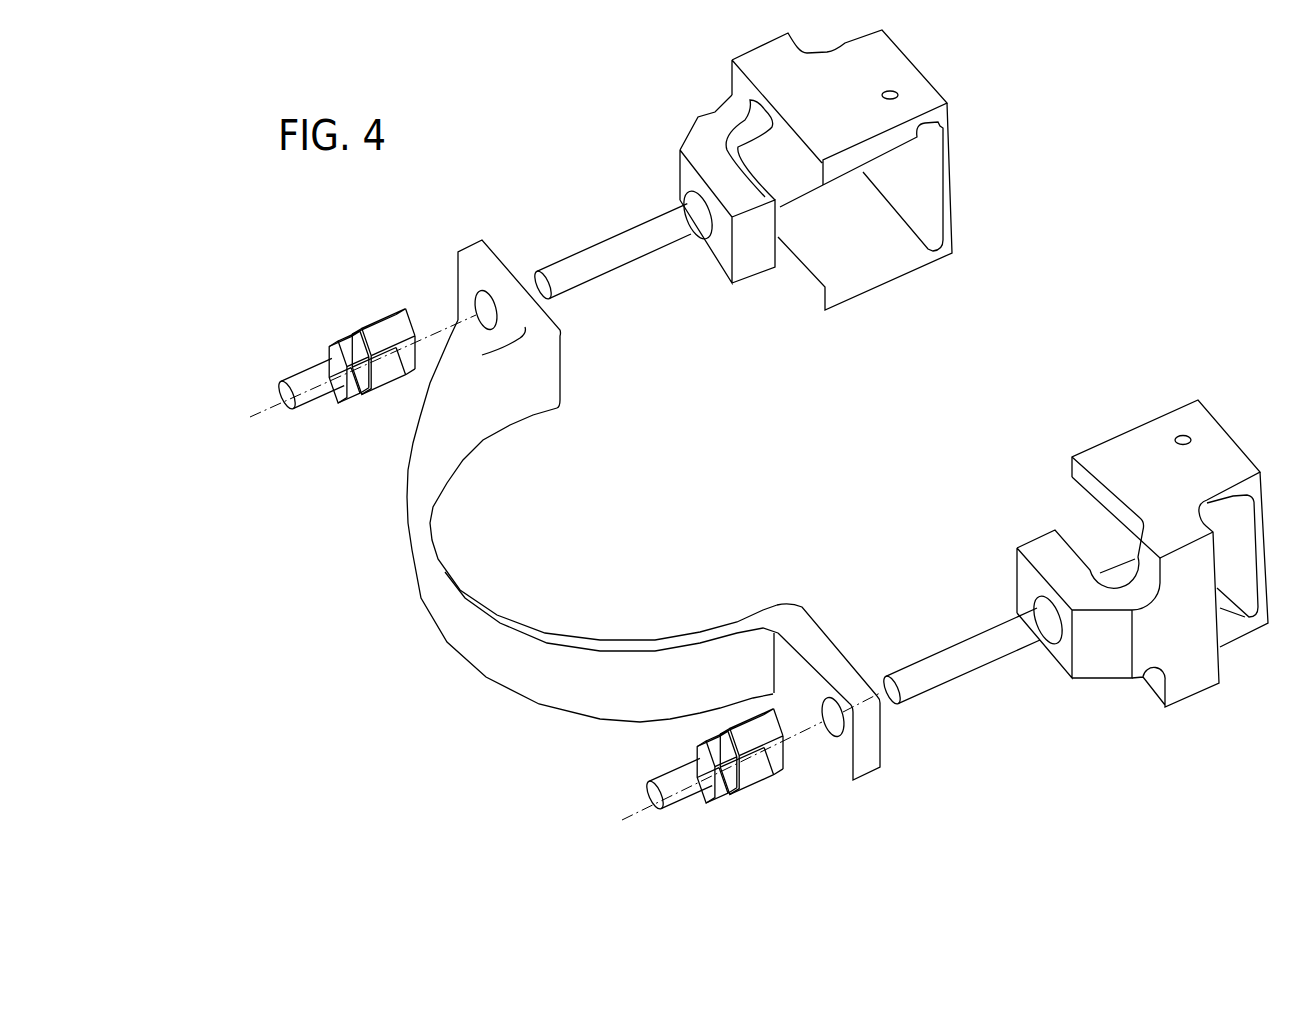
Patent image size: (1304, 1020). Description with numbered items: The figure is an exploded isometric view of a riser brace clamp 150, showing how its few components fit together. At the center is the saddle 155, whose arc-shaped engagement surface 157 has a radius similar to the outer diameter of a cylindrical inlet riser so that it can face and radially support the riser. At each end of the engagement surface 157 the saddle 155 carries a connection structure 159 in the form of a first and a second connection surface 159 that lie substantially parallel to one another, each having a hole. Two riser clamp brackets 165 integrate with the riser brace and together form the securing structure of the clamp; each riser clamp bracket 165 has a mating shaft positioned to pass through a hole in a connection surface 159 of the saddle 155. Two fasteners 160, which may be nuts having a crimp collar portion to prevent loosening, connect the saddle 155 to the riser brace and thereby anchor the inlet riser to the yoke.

The riser brace clamp 150 is at (323, 663).
The saddle 155 is at (484, 686).
The engagement surface 157 is at (565, 630).
The connection structure 159 is at (557, 322).
The fastener 160 is at (310, 403).
The riser clamp bracket 165 is at (881, 291).